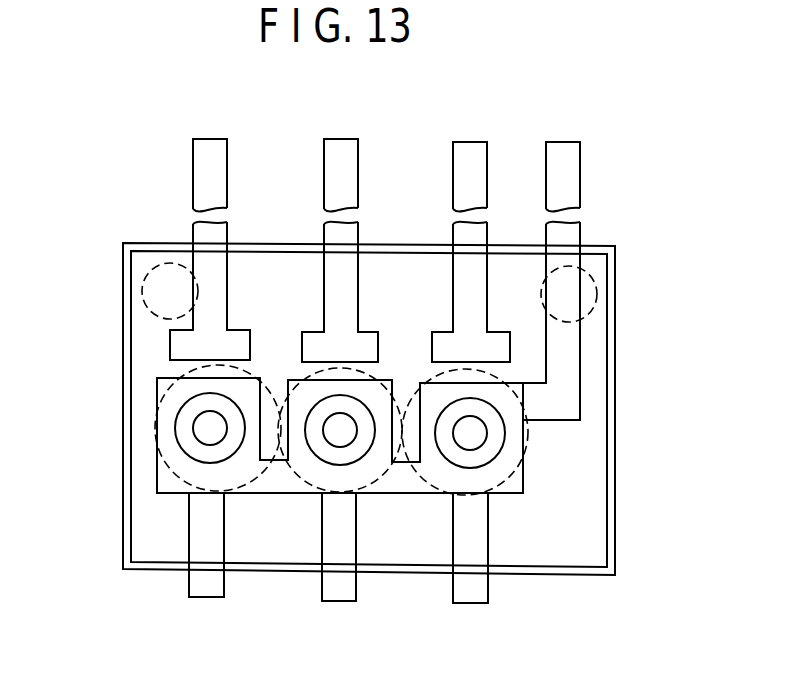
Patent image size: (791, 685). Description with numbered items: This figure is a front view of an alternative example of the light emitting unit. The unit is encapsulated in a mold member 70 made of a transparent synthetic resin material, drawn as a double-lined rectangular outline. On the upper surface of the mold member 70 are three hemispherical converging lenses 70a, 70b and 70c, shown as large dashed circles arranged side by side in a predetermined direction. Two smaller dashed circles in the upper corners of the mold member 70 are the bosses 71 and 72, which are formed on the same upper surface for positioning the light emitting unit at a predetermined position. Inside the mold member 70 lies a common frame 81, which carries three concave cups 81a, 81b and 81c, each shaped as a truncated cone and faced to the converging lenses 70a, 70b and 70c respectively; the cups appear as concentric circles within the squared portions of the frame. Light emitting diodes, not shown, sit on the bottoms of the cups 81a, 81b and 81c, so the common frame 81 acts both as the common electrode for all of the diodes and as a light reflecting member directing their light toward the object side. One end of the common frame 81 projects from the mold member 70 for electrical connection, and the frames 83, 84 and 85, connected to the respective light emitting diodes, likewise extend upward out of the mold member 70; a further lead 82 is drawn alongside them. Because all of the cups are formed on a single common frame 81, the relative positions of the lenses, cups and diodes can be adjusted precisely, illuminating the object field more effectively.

The mold member 70 is at (587, 445).
The converging lens 70a is at (190, 378).
The converging lens 70b is at (302, 375).
The converging lens 70c is at (430, 376).
The boss 71 is at (142, 288).
The boss 72 is at (598, 312).
The common frame 81 is at (178, 468).
The concave cup 81a is at (228, 450).
The concave cup 81b is at (358, 452).
The concave cup 81c is at (488, 452).
The lead terminal 82 is at (572, 158).
The frame 83 is at (212, 148).
The frame 84 is at (345, 148).
The frame 85 is at (468, 148).